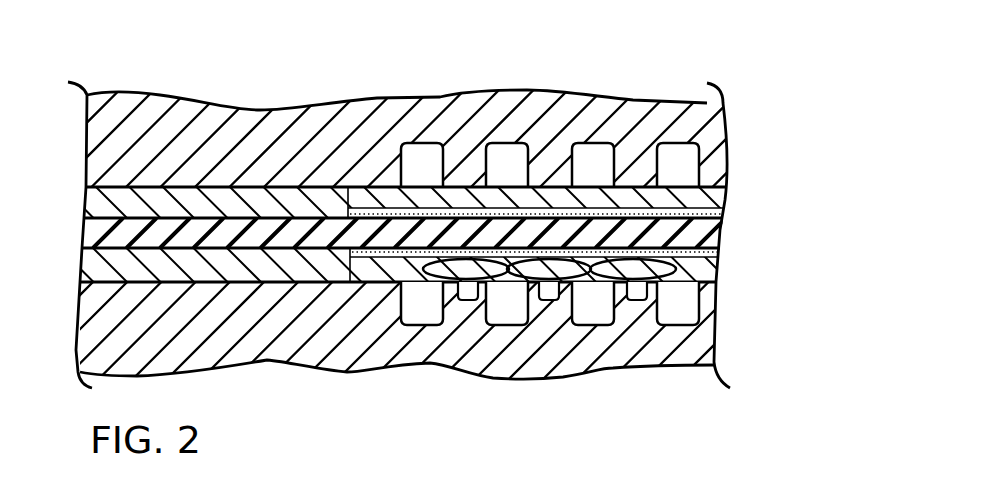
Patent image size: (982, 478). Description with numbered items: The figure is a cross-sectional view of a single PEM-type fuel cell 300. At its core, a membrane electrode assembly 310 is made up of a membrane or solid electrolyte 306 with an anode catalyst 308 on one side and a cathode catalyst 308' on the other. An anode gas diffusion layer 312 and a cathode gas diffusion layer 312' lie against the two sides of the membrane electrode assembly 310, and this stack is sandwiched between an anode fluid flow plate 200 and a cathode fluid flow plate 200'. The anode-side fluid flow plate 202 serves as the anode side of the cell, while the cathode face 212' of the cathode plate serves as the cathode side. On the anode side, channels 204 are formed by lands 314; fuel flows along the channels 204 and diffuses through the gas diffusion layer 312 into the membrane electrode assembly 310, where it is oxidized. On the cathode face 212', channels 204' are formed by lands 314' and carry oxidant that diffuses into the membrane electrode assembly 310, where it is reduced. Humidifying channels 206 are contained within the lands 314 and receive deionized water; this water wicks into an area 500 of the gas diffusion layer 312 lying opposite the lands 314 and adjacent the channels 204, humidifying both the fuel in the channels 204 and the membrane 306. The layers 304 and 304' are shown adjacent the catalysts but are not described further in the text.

The PEM-type fuel cell 300 is at (795, 72).
The cathode fluid flow plate 200' is at (406, 117).
The channels 204' is at (529, 97).
The lands 314' is at (444, 119).
The cathode face 212' is at (644, 120).
The upper adhesive layer 304' is at (390, 202).
The cathode catalyst 308' is at (585, 192).
The membrane electrode assembly 310 is at (768, 213).
The membrane 306 is at (720, 232).
The anode catalyst 308 is at (584, 262).
The lower adhesive layer 304 is at (390, 265).
The cathode gas diffusion layer 312' is at (758, 162).
The anode gas diffusion layer 312 is at (752, 282).
The area 500 is at (426, 273).
The fluid flow plate 202 is at (640, 340).
The channels 204 is at (551, 358).
The humidifying channels 206 is at (463, 303).
The lands 314 is at (463, 373).
The anode fluid flow plate 200 is at (584, 388).